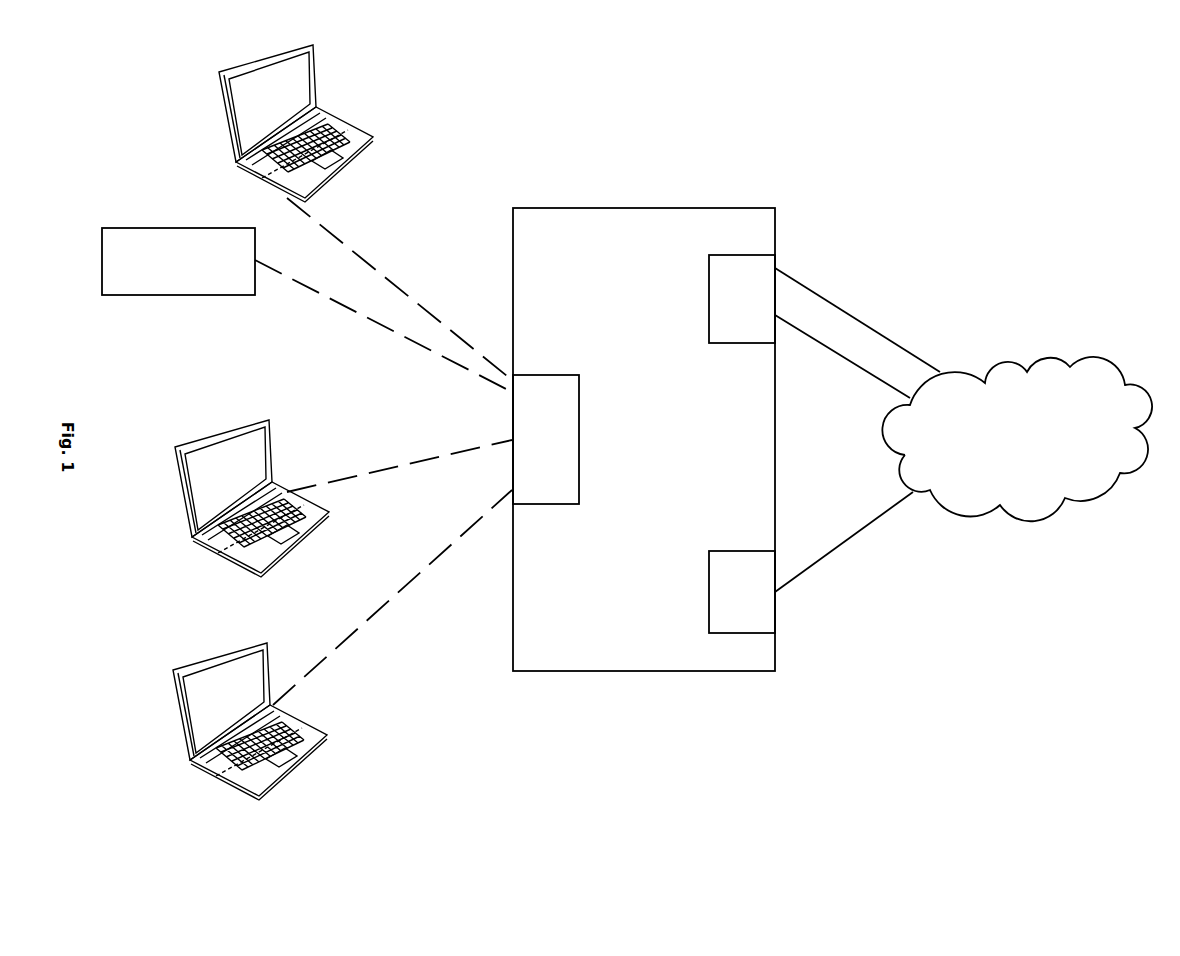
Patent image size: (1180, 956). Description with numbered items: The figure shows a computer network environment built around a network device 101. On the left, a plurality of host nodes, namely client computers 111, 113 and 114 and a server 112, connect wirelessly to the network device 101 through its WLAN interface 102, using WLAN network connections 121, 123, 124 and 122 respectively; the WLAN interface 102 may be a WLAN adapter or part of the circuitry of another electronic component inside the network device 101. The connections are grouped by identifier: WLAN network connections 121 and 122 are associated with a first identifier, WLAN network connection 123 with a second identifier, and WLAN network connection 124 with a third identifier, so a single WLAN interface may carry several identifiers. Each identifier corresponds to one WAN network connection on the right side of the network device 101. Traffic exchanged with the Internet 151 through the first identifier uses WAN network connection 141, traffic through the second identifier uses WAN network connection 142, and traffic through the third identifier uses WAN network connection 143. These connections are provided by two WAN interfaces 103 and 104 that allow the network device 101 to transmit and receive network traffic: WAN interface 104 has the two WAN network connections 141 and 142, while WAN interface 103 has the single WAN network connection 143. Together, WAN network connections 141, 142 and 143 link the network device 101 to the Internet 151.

The network device 101 is at (597, 208).
The WLAN interface 102 is at (579, 483).
The WAN interface 103 is at (709, 572).
The WAN interface 104 is at (709, 323).
The client computer 111 is at (317, 95).
The server 112 is at (230, 297).
The client computer 113 is at (223, 548).
The client computer 114 is at (247, 782).
The WLAN network connection 121 is at (343, 243).
The WLAN network connection 122 is at (347, 308).
The WLAN network connection 123 is at (425, 467).
The WLAN network connection 124 is at (323, 667).
The WAN network connection 141 is at (832, 298).
The WAN network connection 142 is at (880, 377).
The WAN network connection 143 is at (820, 560).
The Internet 151 is at (1043, 357).